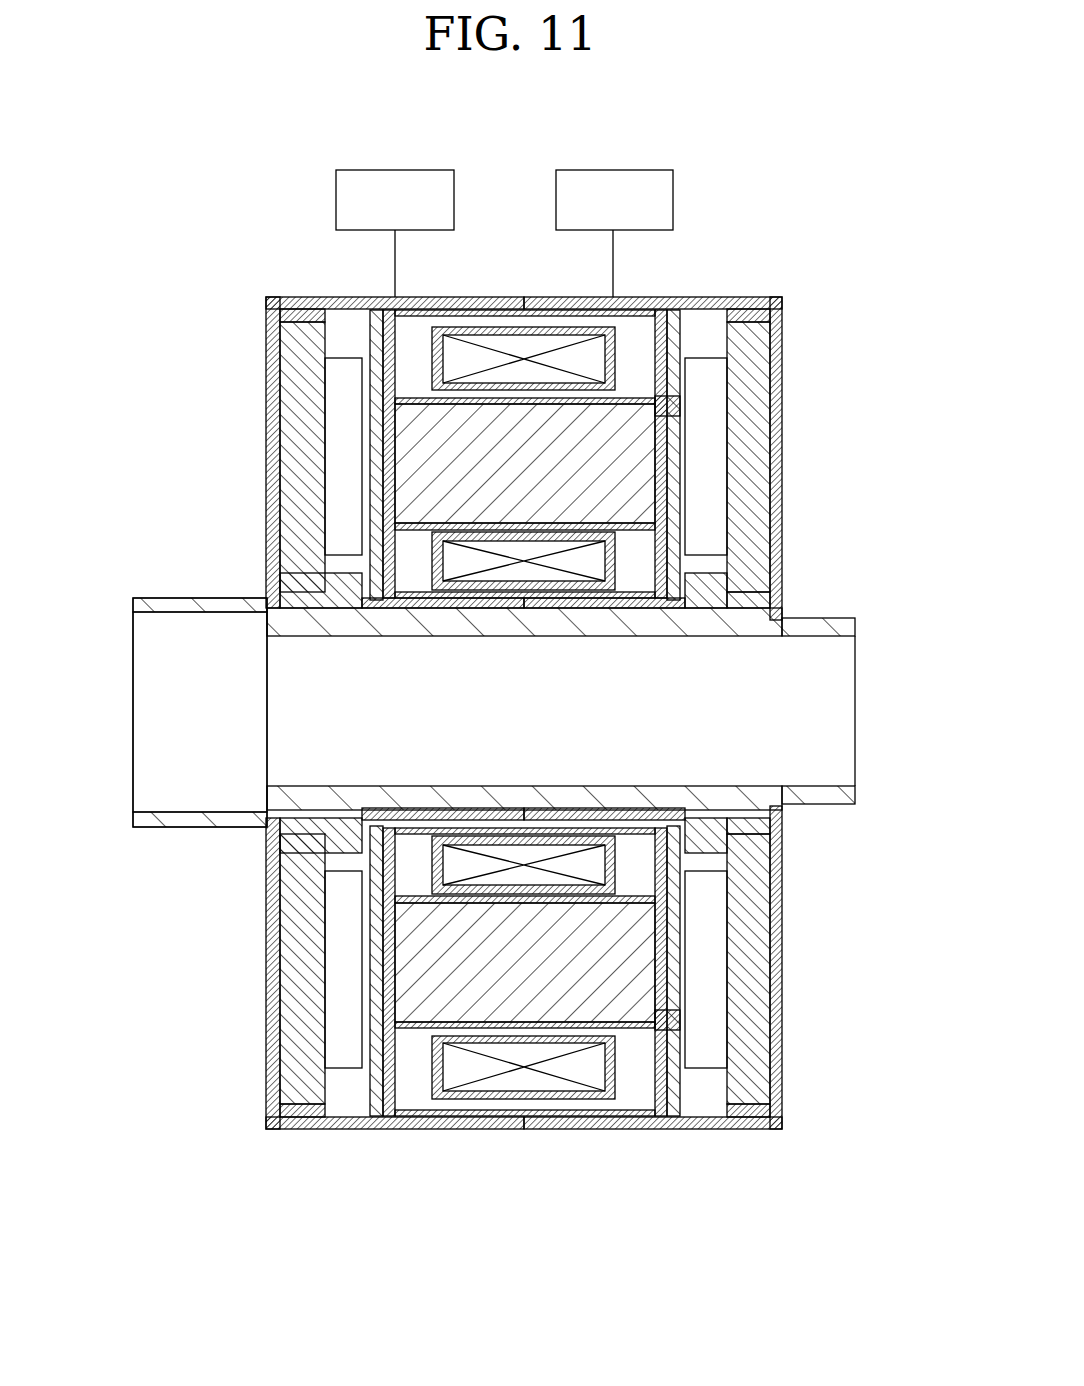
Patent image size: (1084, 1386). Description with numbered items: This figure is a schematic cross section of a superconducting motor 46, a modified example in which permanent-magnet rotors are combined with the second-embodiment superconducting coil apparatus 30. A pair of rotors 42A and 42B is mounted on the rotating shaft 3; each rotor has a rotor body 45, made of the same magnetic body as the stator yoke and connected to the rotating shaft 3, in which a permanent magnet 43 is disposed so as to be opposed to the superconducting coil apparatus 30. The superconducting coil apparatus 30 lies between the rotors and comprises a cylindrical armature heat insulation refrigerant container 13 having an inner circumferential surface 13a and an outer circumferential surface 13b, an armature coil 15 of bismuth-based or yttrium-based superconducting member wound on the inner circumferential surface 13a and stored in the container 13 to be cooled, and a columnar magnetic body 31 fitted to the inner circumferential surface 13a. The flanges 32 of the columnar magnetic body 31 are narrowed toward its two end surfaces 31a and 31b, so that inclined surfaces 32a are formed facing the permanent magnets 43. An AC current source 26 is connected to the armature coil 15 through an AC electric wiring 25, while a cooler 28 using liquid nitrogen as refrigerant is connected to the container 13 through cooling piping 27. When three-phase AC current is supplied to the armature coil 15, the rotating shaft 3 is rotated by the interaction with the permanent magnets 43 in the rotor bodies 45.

The rotating shaft 3 is at (835, 623).
The armature heat insulation refrigerant container 13 is at (528, 1231).
The inner circumferential surface 13a is at (597, 1023).
The outer circumferential surface 13b is at (560, 1118).
The armature coil 15 is at (503, 1085).
The AC electric wiring 25 is at (611, 258).
The AC current source 26 is at (673, 192).
The cooling piping 27 is at (397, 258).
The cooler 28 is at (336, 193).
The superconducting coil apparatus 30 is at (432, 1284).
The columnar magnetic body 31 is at (415, 1005).
The end surface 31a is at (378, 935).
The end surface 31b is at (683, 918).
The flange 32 is at (675, 958).
The inclined surface 32a is at (675, 1023).
The rotor 42A is at (313, 1152).
The rotor 42B is at (739, 1162).
The permanent magnet 43 is at (348, 372).
The rotor body 45 is at (293, 423).
The superconducting motor 46 is at (132, 272).